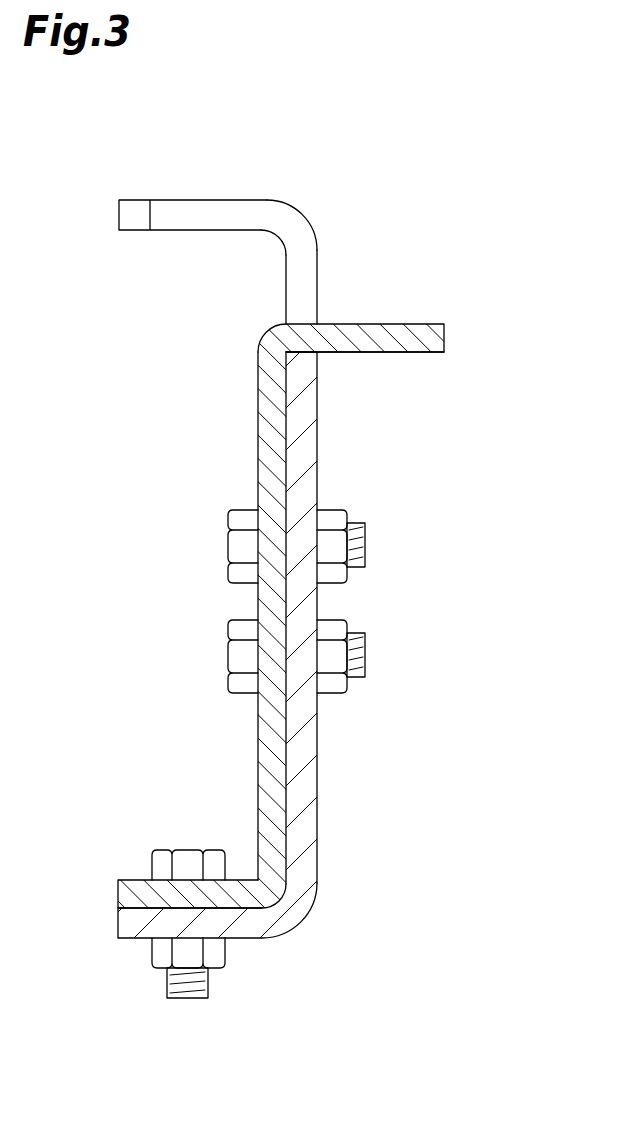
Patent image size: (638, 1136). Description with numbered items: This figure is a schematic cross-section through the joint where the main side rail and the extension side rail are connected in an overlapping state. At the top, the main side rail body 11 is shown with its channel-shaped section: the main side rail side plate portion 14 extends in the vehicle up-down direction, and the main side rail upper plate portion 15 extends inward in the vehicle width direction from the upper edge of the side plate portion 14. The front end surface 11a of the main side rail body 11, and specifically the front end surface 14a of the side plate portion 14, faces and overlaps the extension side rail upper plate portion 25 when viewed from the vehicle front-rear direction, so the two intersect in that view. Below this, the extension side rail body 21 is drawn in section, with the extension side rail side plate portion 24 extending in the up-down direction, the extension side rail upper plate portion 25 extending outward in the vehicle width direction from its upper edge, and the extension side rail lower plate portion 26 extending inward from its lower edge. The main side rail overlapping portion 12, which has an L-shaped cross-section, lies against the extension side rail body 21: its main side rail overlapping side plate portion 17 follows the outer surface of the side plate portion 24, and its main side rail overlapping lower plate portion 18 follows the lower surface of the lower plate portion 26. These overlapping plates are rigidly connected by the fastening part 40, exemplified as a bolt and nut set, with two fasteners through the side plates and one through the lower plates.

The main side rail body 11 is at (282, 214).
The front end surface of the main side rail body 11a is at (278, 223).
The main side rail overlapping portion 12 is at (319, 693).
The main side rail side plate portion 14 is at (305, 307).
The front end surface of the main side rail side plate portion 14a is at (302, 272).
The main side rail upper plate portion 15 is at (193, 213).
The main side rail overlapping side plate portion 17 is at (302, 493).
The main side rail overlapping lower plate portion 18 is at (130, 923).
The extension side rail body 21 is at (252, 764).
The extension side rail side plate portion 24 is at (319, 611).
The extension side rail upper plate portion 25 is at (385, 340).
The extension side rail lower plate portion 26 is at (150, 895).
The fastening part 40 is at (228, 655).